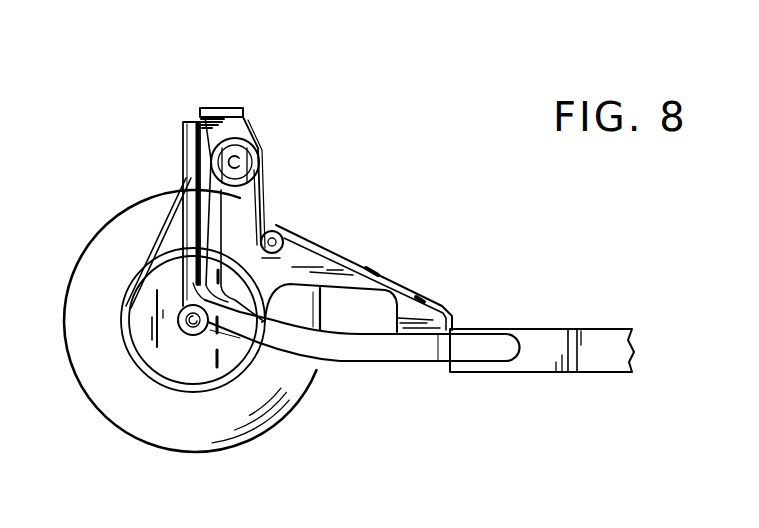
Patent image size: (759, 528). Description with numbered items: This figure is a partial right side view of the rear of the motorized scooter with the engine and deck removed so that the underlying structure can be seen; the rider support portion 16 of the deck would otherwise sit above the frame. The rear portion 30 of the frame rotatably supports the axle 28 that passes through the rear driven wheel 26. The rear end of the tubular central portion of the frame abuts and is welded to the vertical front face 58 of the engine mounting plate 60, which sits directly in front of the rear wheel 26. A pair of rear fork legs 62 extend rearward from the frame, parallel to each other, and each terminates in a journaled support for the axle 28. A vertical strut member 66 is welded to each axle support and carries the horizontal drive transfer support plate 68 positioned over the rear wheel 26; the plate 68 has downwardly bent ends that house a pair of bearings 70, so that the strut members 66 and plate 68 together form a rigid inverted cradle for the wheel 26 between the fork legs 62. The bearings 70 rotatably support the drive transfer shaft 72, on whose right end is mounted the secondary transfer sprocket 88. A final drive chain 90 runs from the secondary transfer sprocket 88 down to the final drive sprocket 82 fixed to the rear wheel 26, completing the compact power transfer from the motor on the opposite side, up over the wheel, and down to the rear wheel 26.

The rider support portion 16 is at (540, 362).
The rear driven wheel 26 is at (238, 415).
The axle 28 is at (189, 331).
The rear portion 30 is at (558, 333).
The vertical front face 58 is at (442, 372).
The engine mounting plate 60 is at (418, 290).
The rear fork legs 62 is at (368, 362).
The vertical strut member 66 is at (188, 172).
The horizontal drive transfer support plate 68 is at (231, 108).
The bearings 70 is at (263, 156).
The drive transfer shaft 72 is at (258, 132).
The final drive sprocket 82 is at (140, 343).
The secondary transfer sprocket 88 is at (266, 188).
The final drive chain 90 is at (160, 234).